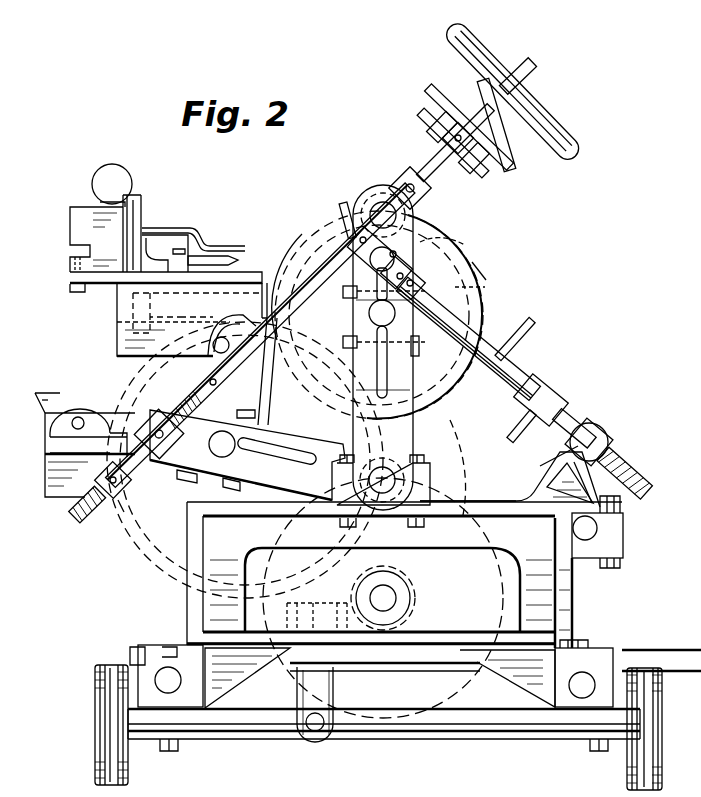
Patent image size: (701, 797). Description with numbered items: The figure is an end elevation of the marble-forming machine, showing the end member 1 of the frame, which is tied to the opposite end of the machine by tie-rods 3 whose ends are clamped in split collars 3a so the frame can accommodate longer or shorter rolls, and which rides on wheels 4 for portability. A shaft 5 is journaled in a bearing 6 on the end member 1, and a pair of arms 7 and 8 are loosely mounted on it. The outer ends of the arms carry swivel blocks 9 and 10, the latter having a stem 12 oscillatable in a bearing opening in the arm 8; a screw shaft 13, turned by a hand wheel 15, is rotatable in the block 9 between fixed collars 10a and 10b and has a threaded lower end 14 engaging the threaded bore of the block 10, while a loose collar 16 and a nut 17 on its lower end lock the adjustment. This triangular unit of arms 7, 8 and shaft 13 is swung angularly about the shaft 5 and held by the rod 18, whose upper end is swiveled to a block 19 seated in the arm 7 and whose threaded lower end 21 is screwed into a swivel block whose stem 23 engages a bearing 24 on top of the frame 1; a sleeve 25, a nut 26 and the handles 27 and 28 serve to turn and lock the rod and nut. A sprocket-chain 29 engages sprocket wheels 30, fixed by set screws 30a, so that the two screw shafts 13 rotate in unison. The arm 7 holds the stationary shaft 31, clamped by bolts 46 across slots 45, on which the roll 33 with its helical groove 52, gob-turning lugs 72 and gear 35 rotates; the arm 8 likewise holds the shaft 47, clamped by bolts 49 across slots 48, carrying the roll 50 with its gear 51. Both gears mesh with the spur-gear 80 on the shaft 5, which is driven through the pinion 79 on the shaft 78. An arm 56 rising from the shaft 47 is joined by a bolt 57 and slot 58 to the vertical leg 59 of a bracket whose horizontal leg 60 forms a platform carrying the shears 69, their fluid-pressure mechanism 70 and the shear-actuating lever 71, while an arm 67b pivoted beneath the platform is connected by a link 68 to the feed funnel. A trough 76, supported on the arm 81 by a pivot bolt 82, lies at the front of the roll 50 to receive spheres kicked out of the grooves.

The end member 1 is at (187, 583).
The tie-rods 3 is at (600, 528).
The split collars 3a is at (623, 545).
The wheels 4 is at (128, 765).
The shaft 5 is at (398, 468).
The bearing 6 is at (426, 483).
The arm 7 is at (383, 347).
The arm 8 is at (247, 455).
The swivel block 9 is at (382, 186).
The swivel block 10 is at (148, 415).
The fixed collar 10a is at (406, 175).
The fixed collar 10b is at (345, 204).
The stem 12 is at (163, 439).
The screw shaft 13 is at (434, 172).
The threaded lower end 14 is at (98, 520).
The hand wheel 15 is at (510, 112).
The collar 16 is at (132, 480).
The nut 17 is at (126, 518).
The rod or shaft 18 is at (490, 333).
The block 19 is at (440, 240).
The threaded lower end 21 is at (634, 470).
The stem 23 is at (600, 430).
The bearing 24 is at (546, 458).
The sleeve 25 is at (578, 414).
The nut 26 is at (562, 392).
The radial handle 27 is at (533, 327).
The handle 28 is at (516, 428).
The sprocket-chain 29 is at (507, 172).
The sprocket wheels 30 is at (421, 97).
The set screws 30a is at (437, 130).
The stationary shaft 31 is at (369, 313).
The cylinder or roll 33 is at (470, 254).
The gear 35 is at (488, 282).
The longitudinal slots 45 is at (371, 345).
The bolts 46 is at (419, 342).
The shaft 47 is at (236, 443).
The slots 48 is at (277, 460).
The bolts 49 is at (222, 489).
The cylinder or roll 50 is at (152, 522).
The gear 51 is at (160, 537).
The helical groove 52 is at (486, 288).
The arm 56 is at (252, 371).
The bolt 57 is at (213, 346).
The slot 58 is at (228, 318).
The vertical leg 59 is at (117, 350).
The horizontal leg 60 is at (118, 286).
The arm 67b is at (117, 330).
The link 68 is at (268, 282).
The shears 69 is at (228, 254).
The fluid-pressure mechanism 70 is at (143, 201).
The shear-actuating lever 71 is at (193, 228).
The gob-turning lugs 72 is at (318, 226).
The trough 76 is at (46, 460).
The shaft 78 is at (397, 600).
The pinion 79 is at (351, 587).
The spur-gear 80 is at (470, 488).
The arm 81 is at (45, 413).
The pivot bolt 82 is at (78, 416).